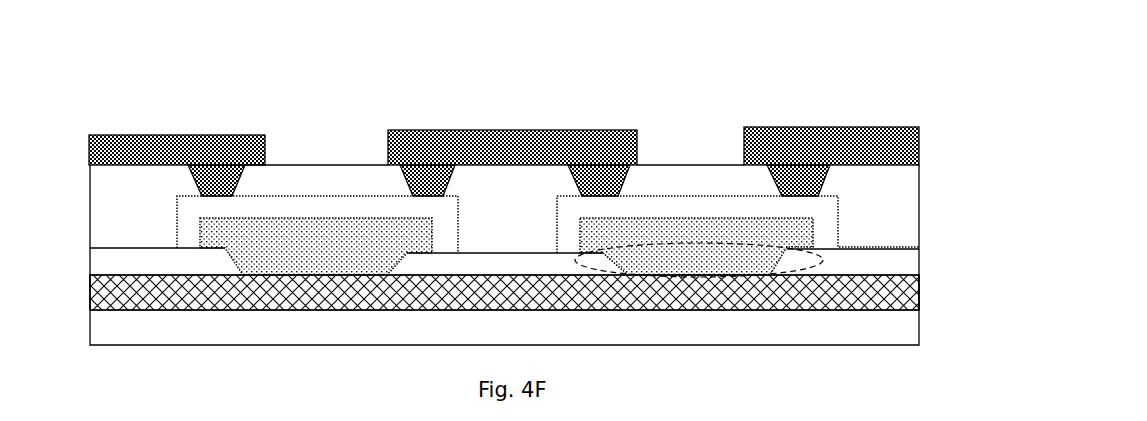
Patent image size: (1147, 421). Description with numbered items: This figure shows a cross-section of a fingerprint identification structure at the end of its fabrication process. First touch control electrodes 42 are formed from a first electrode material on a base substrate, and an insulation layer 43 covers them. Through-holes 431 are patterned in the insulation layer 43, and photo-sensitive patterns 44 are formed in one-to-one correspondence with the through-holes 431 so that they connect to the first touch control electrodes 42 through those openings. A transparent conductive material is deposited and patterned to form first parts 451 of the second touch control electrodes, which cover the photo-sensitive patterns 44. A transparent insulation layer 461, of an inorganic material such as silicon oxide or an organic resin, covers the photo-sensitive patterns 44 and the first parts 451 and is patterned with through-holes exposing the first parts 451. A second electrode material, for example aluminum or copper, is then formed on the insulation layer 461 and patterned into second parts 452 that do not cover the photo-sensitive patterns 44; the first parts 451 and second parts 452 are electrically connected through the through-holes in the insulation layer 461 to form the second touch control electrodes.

The first touch control electrode 42 is at (800, 298).
The insulation layer 43 is at (870, 262).
The through-hole 431 is at (598, 273).
The photo-sensitive pattern 44 is at (797, 232).
The first part of second touch control electrode 451 is at (797, 202).
The second part of second touch control electrode 452 is at (483, 148).
The transparent insulation layer 461 is at (296, 178).